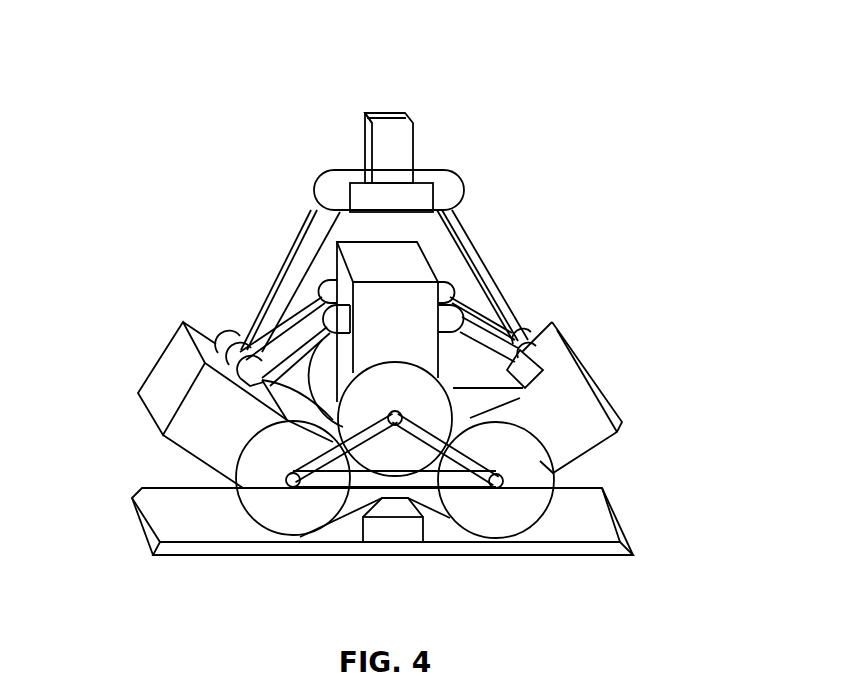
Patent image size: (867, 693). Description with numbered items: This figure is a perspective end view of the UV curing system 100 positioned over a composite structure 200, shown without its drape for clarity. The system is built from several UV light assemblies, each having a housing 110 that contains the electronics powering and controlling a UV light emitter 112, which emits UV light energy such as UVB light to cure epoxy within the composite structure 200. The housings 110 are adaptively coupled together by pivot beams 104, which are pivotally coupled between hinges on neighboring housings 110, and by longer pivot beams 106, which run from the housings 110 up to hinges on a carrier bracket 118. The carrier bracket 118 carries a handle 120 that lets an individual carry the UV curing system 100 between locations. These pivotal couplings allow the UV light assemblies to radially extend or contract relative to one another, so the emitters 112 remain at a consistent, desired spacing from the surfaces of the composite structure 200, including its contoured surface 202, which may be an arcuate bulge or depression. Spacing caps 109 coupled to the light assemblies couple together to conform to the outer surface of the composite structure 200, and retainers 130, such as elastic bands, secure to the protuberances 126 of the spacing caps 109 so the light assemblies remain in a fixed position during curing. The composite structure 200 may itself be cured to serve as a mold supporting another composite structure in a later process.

The UV curing system 100 is at (240, 74).
The pivot beams 104 is at (305, 338).
The pivot beams 106 is at (462, 232).
The spacing caps 109 is at (413, 395).
The housings 110 is at (375, 250).
The UV light emitters 112 is at (490, 420).
The carrier bracket 118 is at (404, 117).
The handle 120 is at (386, 116).
The protuberances 126 is at (291, 488).
The retainers 130 is at (300, 452).
The composite structure 200 is at (634, 498).
The contoured surface 202 is at (390, 524).